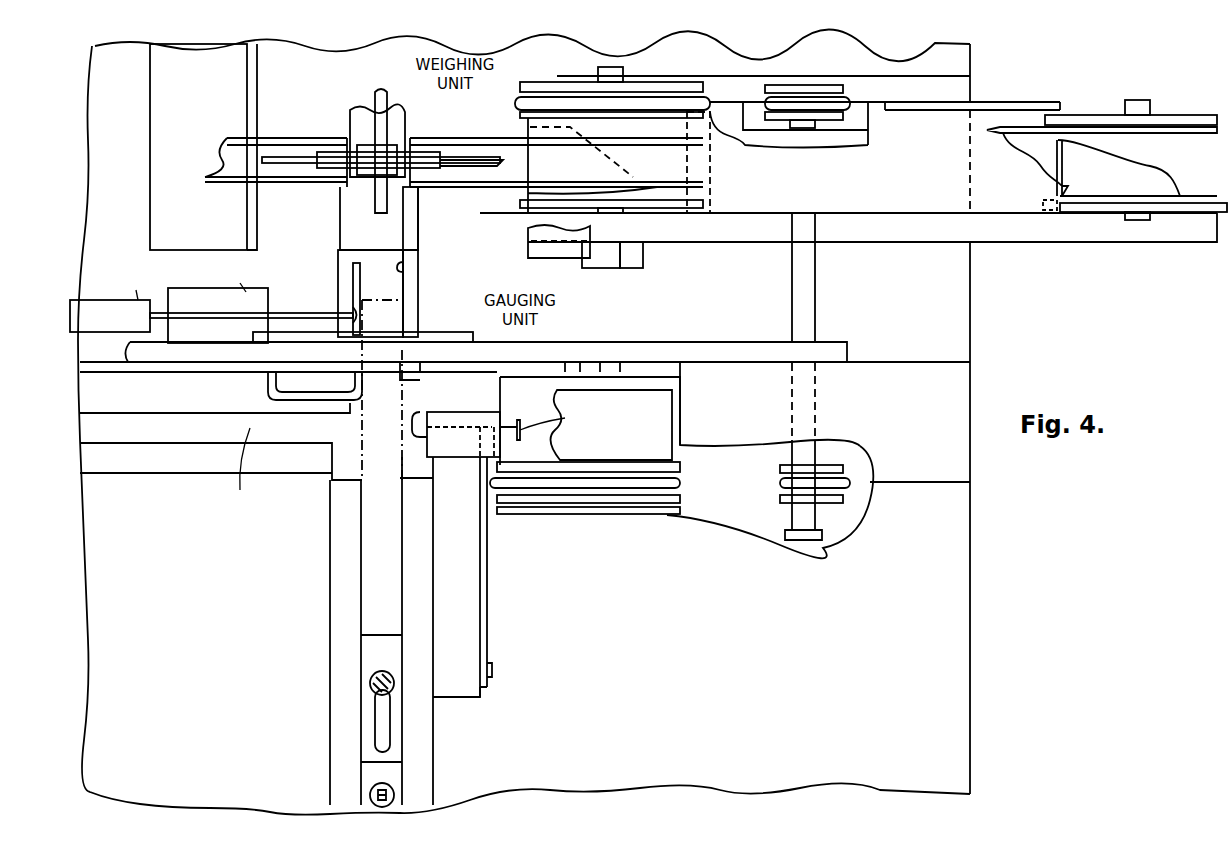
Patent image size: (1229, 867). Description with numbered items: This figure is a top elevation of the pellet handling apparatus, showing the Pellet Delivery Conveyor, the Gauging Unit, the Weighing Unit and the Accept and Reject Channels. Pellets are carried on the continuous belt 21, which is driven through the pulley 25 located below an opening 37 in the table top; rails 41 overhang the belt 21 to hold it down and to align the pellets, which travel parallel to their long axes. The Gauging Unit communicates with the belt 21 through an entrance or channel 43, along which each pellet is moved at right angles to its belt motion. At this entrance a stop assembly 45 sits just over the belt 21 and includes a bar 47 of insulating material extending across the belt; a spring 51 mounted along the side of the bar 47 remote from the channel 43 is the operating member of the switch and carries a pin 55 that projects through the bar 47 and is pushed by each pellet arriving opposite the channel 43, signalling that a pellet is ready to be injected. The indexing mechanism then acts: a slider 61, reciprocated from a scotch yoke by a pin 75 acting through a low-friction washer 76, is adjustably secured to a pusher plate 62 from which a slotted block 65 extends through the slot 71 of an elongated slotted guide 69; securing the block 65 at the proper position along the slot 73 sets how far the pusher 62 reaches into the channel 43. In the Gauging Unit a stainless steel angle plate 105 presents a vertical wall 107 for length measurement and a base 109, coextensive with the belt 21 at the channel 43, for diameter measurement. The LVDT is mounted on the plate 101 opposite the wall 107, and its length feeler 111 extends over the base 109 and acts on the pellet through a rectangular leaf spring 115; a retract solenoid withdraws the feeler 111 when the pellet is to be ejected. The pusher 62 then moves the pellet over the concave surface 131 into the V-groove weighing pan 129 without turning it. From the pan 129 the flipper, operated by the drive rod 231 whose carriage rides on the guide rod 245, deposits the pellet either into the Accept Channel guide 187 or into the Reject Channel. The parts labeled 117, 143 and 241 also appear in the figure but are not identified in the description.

The belt 21 is at (202, 422).
The pulley 25 is at (676, 466).
The opening 37 is at (556, 472).
The rails 41 is at (132, 455).
The entrance or channel 43 is at (378, 436).
The stop assembly 45 is at (450, 415).
The bar 47 is at (460, 683).
The spring 51 is at (488, 610).
The pin 55 is at (423, 413).
The slider 61 is at (372, 771).
The pusher plate 62 is at (372, 576).
The slotted block 65 is at (372, 648).
The elongated slotted guide 69 is at (340, 685).
The slot 71 is at (405, 568).
The slot 73 is at (382, 736).
The pin 75 is at (392, 795).
The washer 76 is at (370, 791).
The plate 101 is at (655, 350).
The angle plate 105 is at (418, 283).
The vertical wall 107 is at (405, 264).
The base 109 is at (367, 258).
The length feeler 111 is at (352, 312).
The rectangular leaf spring 115 is at (365, 393).
The transfer tube 117 is at (292, 410).
The weighing pan 129 is at (357, 148).
The concave surface 131 is at (350, 200).
The balance block 143 is at (363, 112).
The guide 187 is at (503, 180).
The drive rod 231 is at (383, 94).
The reject pusher rod 241 is at (330, 160).
The guide rod 245 is at (473, 158).